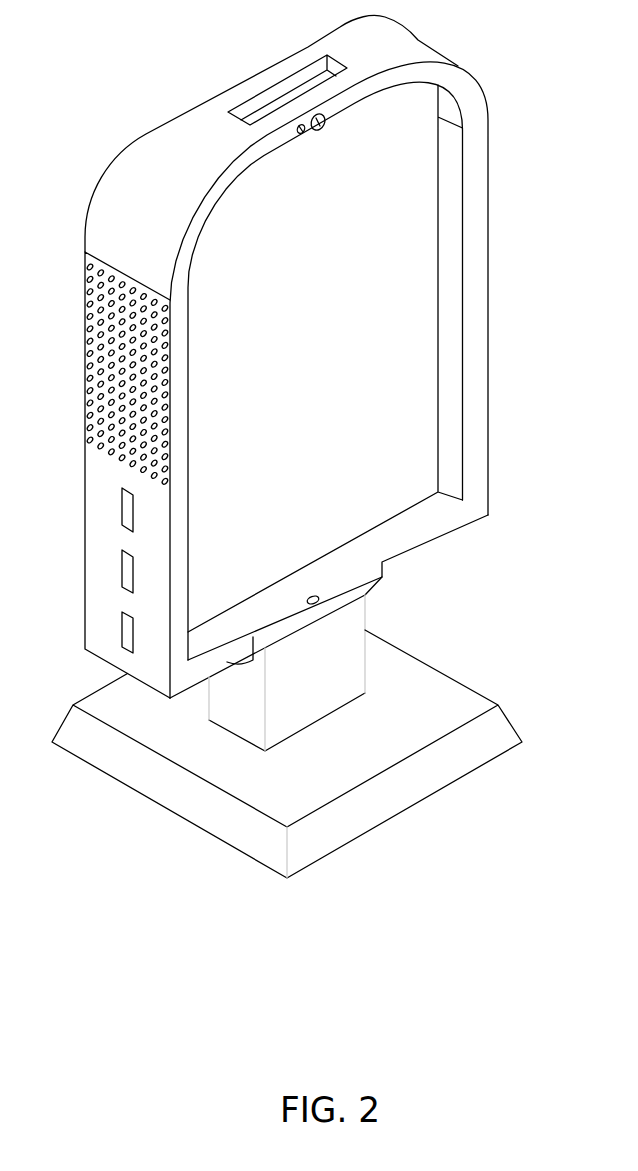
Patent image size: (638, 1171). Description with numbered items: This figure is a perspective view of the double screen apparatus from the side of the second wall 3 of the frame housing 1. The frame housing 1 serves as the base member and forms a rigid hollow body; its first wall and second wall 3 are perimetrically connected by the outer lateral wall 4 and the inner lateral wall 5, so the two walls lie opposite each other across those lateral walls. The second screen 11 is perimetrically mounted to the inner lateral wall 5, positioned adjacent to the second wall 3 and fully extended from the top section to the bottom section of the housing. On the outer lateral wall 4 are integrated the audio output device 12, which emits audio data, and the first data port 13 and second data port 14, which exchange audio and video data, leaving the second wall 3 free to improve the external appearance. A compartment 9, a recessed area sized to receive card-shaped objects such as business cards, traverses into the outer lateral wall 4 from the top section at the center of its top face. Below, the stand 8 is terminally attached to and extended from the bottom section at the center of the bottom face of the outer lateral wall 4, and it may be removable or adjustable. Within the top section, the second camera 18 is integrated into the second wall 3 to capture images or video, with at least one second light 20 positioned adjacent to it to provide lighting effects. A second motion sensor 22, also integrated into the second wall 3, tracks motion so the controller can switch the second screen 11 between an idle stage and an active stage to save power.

The frame housing 1 is at (527, 373).
The second wall 3 is at (462, 235).
The outer lateral wall 4 is at (375, 55).
The inner lateral wall 5 is at (440, 279).
The stand 8 is at (493, 745).
The compartment 9 is at (275, 90).
The second screen 11 is at (336, 389).
The audio output device 12 is at (101, 383).
The first data port 13 is at (123, 508).
The second data port 14 is at (126, 577).
The second camera 18 is at (325, 122).
The second light 20 is at (302, 133).
The second motion sensor 22 is at (322, 598).